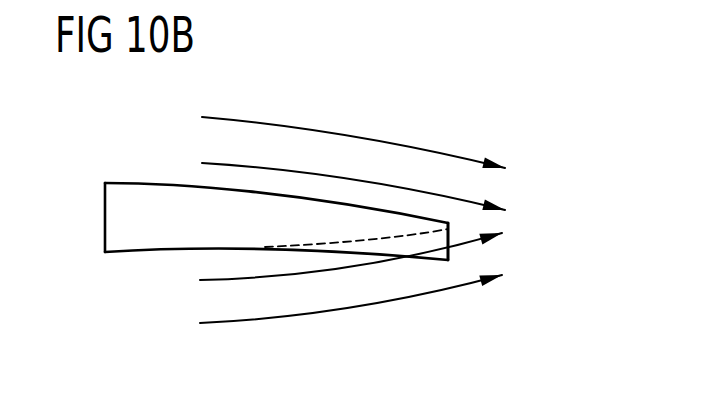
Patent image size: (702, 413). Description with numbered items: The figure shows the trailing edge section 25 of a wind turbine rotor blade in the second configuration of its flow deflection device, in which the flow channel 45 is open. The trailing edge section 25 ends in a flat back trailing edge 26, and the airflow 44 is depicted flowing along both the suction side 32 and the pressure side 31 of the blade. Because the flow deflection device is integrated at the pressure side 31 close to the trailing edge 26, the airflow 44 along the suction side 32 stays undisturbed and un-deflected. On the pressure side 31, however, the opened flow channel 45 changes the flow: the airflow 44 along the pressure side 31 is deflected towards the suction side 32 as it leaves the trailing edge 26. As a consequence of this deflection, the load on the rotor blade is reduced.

The trailing edge section 25 is at (297, 217).
The flat back trailing edge 26 is at (450, 250).
The pressure side 31 is at (155, 252).
The suction side 32 is at (153, 182).
The airflow 44 is at (358, 177).
The flow channel 45 is at (426, 218).